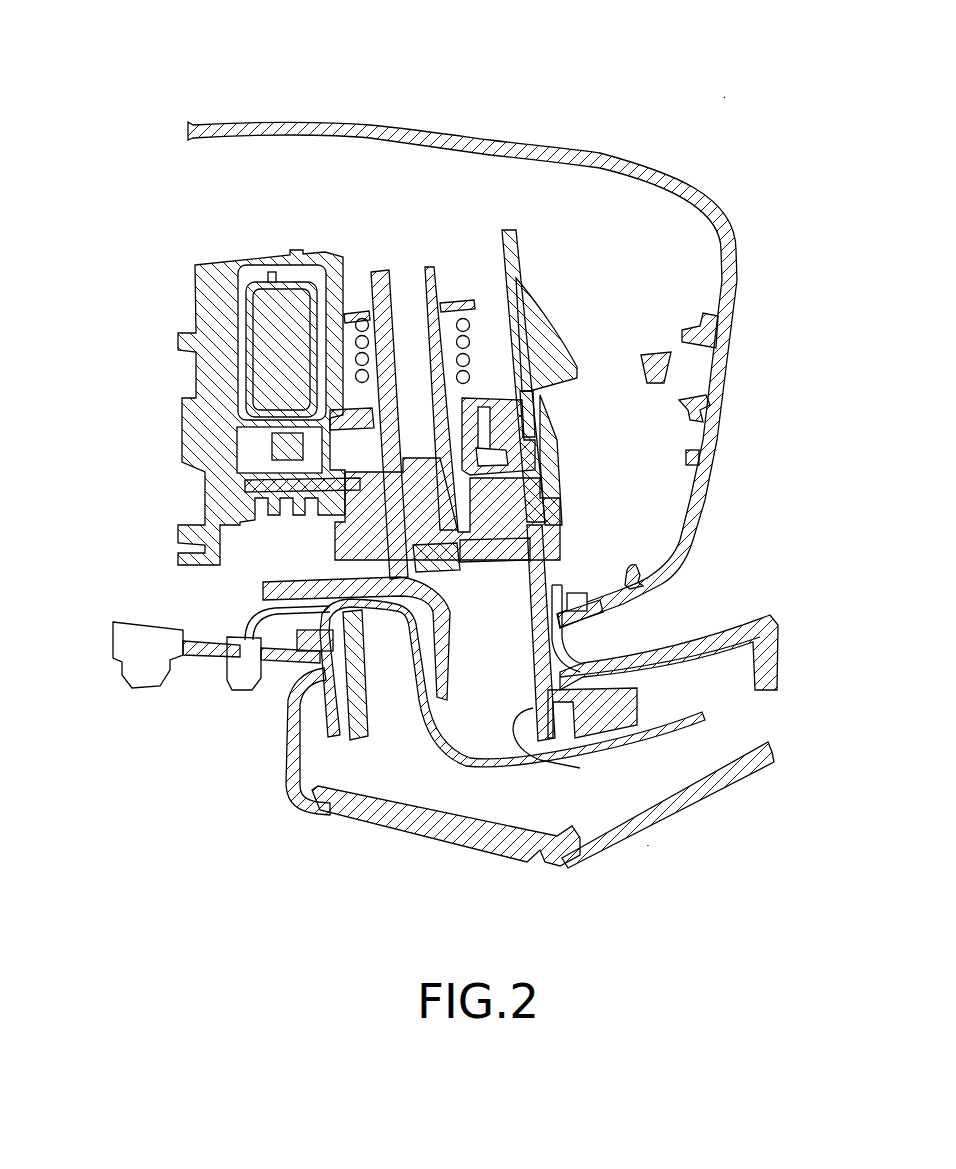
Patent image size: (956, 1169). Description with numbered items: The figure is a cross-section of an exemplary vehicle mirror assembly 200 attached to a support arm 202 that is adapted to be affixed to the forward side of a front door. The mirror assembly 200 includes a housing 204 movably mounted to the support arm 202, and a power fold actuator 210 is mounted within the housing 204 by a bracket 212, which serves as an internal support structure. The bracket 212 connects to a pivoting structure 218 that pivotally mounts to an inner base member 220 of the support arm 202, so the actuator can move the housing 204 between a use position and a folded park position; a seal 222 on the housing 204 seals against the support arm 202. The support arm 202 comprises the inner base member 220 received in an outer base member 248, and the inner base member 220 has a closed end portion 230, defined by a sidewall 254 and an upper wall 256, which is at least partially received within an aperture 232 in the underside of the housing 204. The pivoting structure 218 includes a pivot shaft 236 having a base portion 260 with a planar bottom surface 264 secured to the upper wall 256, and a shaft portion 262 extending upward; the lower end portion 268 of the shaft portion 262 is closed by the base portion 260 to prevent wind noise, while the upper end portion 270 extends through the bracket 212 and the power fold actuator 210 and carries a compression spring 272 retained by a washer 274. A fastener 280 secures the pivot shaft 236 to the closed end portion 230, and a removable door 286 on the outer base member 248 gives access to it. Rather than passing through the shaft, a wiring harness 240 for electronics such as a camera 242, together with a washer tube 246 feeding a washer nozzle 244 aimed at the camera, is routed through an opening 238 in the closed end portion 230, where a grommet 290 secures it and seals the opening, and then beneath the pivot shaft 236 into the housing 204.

The mirror assembly 200 is at (731, 91).
The support arm 202 is at (648, 860).
The housing 204 is at (378, 98).
The power fold actuator 210 is at (296, 300).
The bracket 212 is at (184, 442).
The pivoting structure 218 is at (455, 245).
The inner base member 220 is at (537, 759).
The seal 222 is at (562, 590).
The closed end portion 230 is at (493, 690).
The aperture 232 is at (570, 641).
The pivot shaft 236 is at (383, 273).
The opening 238 is at (362, 614).
The wiring harness 240 is at (268, 603).
The camera 242 is at (148, 624).
The washer nozzle 244 is at (228, 684).
The washer tube 246 is at (638, 749).
The outer base member 248 is at (738, 766).
The sidewall 254 is at (534, 555).
The upper wall 256 is at (514, 556).
The base portion 260 is at (540, 528).
The shaft portion 262 is at (465, 362).
The planar bottom surface 264 is at (487, 542).
The lower end portion 268 is at (511, 441).
The upper end portion 270 is at (447, 298).
The compression spring 272 is at (459, 297).
The washer 274 is at (514, 232).
The fastener 280 is at (338, 538).
The door 286 is at (432, 838).
The grommet 290 is at (333, 568).